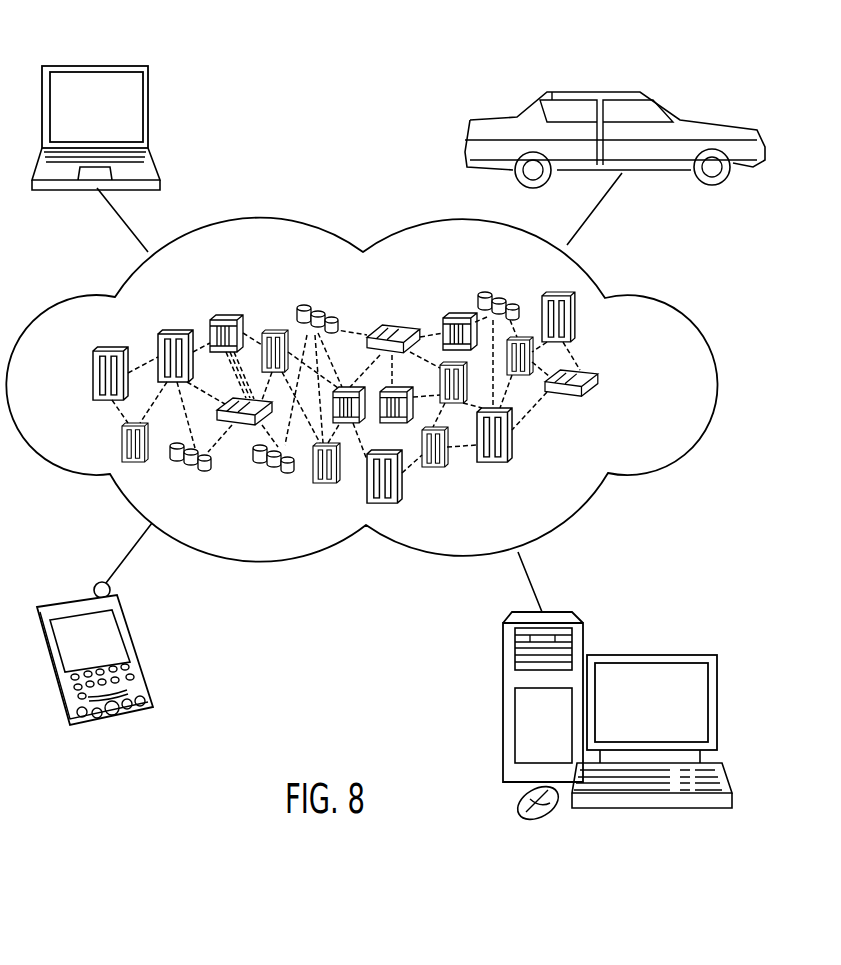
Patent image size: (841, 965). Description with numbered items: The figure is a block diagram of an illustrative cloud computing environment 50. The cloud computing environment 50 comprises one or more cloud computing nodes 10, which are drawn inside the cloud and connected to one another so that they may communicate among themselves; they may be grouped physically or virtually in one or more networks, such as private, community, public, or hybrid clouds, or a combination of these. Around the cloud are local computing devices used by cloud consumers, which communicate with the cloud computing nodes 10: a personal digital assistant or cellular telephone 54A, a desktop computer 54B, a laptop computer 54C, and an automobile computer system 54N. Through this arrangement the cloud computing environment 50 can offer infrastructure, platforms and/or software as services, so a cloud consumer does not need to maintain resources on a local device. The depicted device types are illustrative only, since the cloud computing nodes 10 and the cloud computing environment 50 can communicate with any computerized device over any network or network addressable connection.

The laptop computer 54C is at (95, 63).
The automobile computer system 54N is at (593, 90).
The cloud computing environment 50 is at (663, 302).
The cloud computing node 10 is at (607, 386).
The personal digital assistant (PDA) or cellular telephone 54A is at (77, 597).
The desktop computer 54B is at (650, 653).